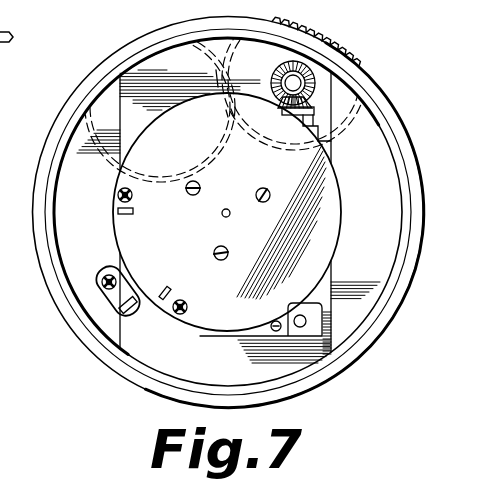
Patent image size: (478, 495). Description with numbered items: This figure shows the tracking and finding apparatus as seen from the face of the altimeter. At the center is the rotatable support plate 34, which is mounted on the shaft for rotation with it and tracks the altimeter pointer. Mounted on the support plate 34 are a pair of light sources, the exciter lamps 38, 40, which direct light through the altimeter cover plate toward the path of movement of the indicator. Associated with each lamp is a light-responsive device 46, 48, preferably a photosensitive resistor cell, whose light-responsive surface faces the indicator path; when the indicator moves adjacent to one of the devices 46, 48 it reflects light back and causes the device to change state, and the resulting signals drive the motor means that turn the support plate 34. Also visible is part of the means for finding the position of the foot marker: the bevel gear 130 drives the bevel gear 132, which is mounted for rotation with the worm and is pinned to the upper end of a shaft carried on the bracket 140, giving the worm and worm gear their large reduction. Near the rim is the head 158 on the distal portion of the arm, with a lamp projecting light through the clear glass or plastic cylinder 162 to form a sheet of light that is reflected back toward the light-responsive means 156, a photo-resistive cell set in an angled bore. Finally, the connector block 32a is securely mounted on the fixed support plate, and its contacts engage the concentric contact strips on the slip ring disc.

The support plate 34 is at (257, 171).
The bevel gear 130 is at (310, 68).
The bevel gear 132 is at (313, 106).
The bracket 140 is at (317, 128).
The light-responsive device 46 is at (118, 193).
The light source 38 is at (118, 211).
The light source 40 is at (166, 287).
The light-responsive device 48 is at (188, 306).
The light-responsive means 156 is at (97, 278).
The head 158 is at (113, 297).
The clear cylinder 162 is at (121, 318).
The connector block 32a is at (287, 330).